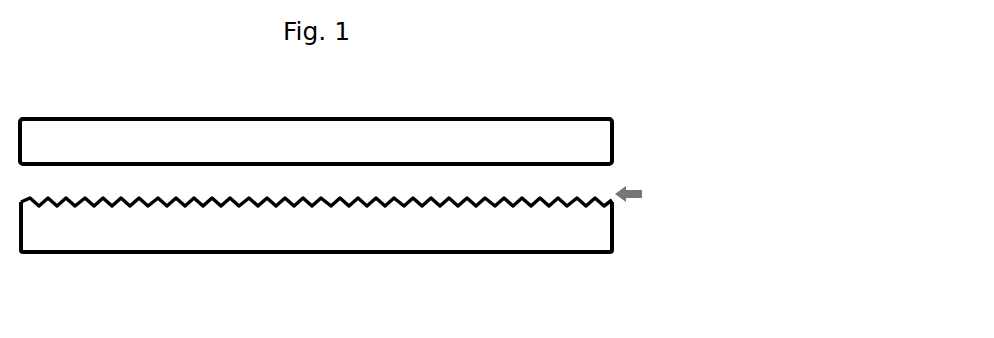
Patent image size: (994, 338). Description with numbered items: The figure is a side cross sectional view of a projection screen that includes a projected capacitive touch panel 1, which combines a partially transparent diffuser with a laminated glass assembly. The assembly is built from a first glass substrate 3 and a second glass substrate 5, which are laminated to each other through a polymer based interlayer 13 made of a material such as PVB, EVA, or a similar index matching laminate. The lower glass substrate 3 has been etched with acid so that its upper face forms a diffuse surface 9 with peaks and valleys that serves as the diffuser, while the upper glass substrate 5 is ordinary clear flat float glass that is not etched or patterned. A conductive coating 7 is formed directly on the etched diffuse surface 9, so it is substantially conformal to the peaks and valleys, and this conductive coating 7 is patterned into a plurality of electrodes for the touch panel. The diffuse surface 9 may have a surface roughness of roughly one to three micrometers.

The projected capacitive touch panel 1 is at (796, 1).
The first glass substrate 3 is at (353, 259).
The second glass substrate 5 is at (518, 137).
The conductive coating 7 is at (908, 224).
The diffuse surface 9 is at (686, 314).
The polymer based interlayer 13 is at (614, 171).